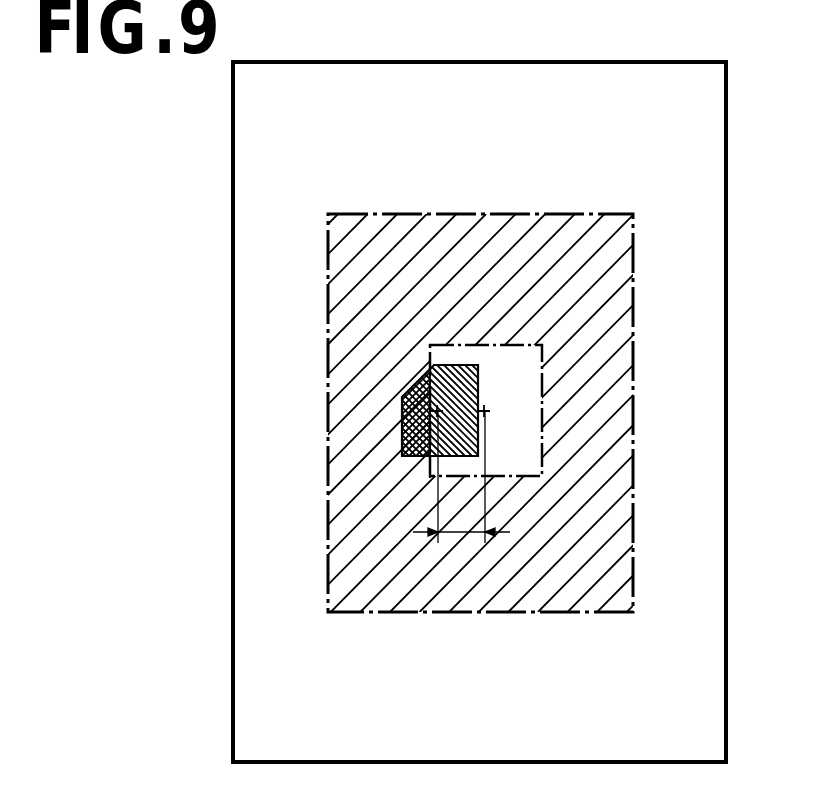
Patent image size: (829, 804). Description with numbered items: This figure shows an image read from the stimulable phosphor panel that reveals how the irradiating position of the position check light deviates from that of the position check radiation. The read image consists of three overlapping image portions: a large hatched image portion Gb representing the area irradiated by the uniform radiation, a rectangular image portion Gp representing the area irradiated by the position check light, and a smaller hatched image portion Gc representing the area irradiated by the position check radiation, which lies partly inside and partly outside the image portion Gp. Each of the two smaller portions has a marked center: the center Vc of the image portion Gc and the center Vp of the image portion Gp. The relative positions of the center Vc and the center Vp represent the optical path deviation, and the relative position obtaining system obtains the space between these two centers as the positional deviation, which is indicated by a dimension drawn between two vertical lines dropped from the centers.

The image portion representing the area irradiated by the uniform radiation Gb is at (610, 225).
The image portion representing the area irradiated by the position check light Gp is at (522, 364).
The image portion representing the area irradiated by the position check radiation Gc is at (416, 456).
The center of the image portion Gc Vc is at (436, 411).
The center of the image portion Gp Vp is at (486, 412).